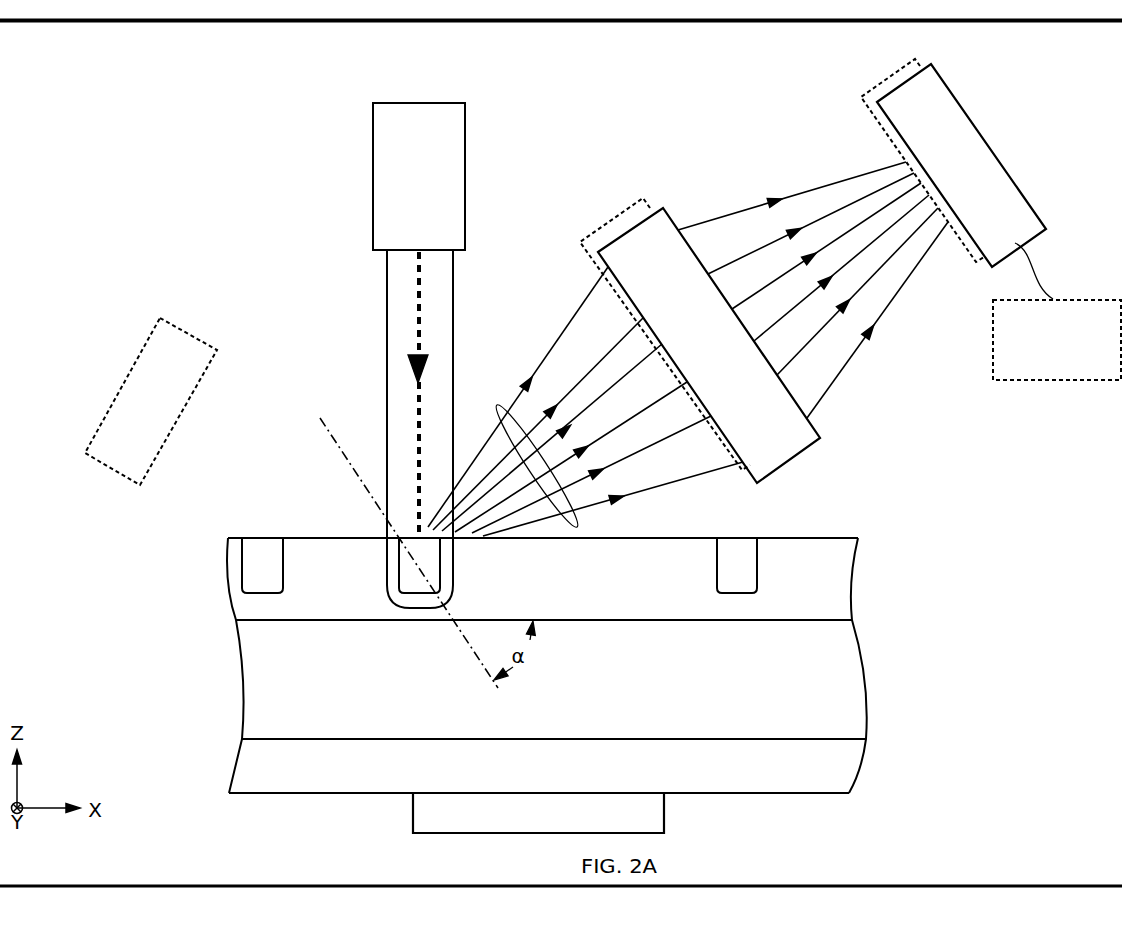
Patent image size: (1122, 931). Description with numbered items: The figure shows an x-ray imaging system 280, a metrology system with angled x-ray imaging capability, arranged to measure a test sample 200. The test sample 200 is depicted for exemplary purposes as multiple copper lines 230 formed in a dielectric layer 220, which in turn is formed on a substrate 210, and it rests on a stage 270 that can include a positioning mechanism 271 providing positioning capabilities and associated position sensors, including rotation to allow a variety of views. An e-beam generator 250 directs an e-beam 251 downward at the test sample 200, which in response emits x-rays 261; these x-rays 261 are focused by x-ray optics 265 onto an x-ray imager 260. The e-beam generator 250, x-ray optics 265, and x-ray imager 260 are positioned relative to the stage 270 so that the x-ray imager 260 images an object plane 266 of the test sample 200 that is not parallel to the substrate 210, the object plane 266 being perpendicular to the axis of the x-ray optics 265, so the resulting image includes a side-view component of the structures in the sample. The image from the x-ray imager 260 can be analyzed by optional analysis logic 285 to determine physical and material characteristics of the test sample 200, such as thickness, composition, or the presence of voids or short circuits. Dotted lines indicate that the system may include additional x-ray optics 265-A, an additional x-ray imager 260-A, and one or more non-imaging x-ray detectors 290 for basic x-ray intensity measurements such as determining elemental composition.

The x-ray imaging system 280 is at (74, 88).
The non-imaging x-ray detector 290 is at (143, 348).
The e-beam generator 250 is at (437, 212).
The e-beam 251 is at (387, 300).
The x-rays 261 is at (497, 405).
The x-ray optics 265 is at (622, 224).
The additional x-ray optics 265-A is at (600, 230).
The x-ray imager 260 is at (1022, 193).
The additional x-ray imager 260-A is at (860, 117).
The analysis logic 285 is at (1041, 377).
The test sample 200 is at (183, 727).
The dielectric layer 220 is at (837, 558).
The copper lines 230 is at (737, 558).
The substrate 210 is at (815, 717).
The stage 270 is at (815, 779).
The positioning mechanism 271 is at (520, 826).
The object plane 266 is at (457, 627).